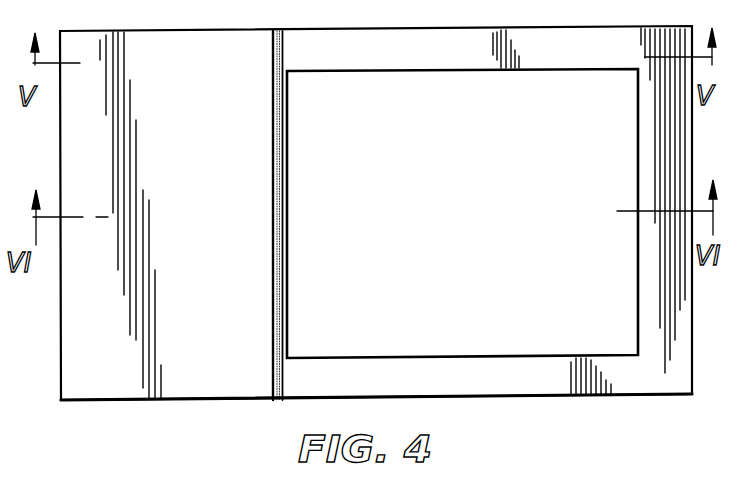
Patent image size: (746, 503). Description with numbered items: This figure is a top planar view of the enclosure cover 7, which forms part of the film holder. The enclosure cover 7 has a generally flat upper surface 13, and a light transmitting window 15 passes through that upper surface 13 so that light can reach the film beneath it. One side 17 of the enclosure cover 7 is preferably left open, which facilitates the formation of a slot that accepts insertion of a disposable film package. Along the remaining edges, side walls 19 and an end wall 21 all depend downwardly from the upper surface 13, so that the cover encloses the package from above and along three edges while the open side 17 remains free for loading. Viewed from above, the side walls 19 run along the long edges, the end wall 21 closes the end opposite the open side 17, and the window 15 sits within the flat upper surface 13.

The enclosure cover 7 is at (213, 380).
The upper surface 13 is at (240, 42).
The light transmitting window 15 is at (571, 70).
The side 17 is at (60, 325).
The side walls 19 is at (381, 30).
The end wall 21 is at (692, 372).